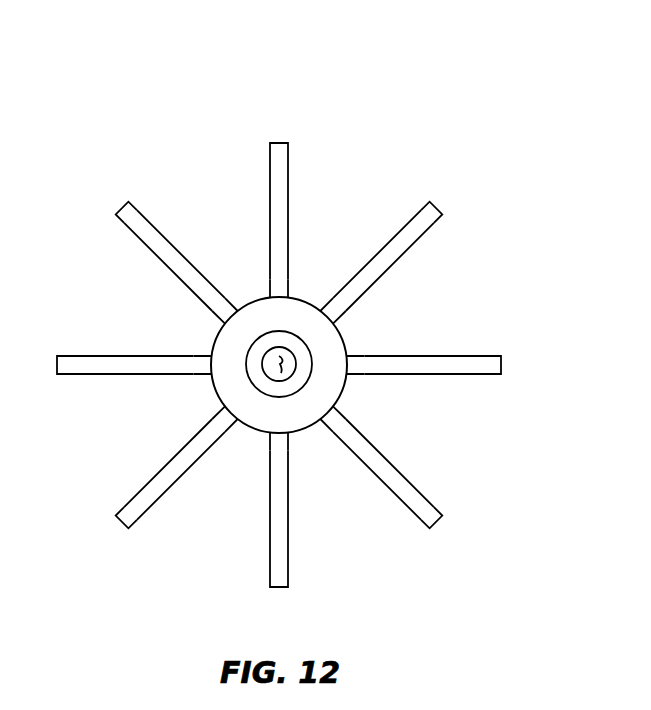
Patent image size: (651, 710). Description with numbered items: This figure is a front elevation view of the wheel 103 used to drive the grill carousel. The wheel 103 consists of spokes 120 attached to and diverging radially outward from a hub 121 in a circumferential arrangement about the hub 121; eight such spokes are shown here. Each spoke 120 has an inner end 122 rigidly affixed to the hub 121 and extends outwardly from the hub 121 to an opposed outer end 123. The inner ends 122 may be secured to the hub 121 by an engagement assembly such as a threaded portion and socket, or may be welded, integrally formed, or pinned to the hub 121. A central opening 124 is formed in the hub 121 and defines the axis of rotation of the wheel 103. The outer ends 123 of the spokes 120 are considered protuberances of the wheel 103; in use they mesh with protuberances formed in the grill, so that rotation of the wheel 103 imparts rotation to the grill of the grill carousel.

The wheel 103 is at (299, 136).
The spokes 120 is at (382, 247).
The hub 121 is at (333, 388).
The inner end 122 is at (330, 306).
The outer end 123 is at (281, 141).
The central opening 124 is at (283, 365).